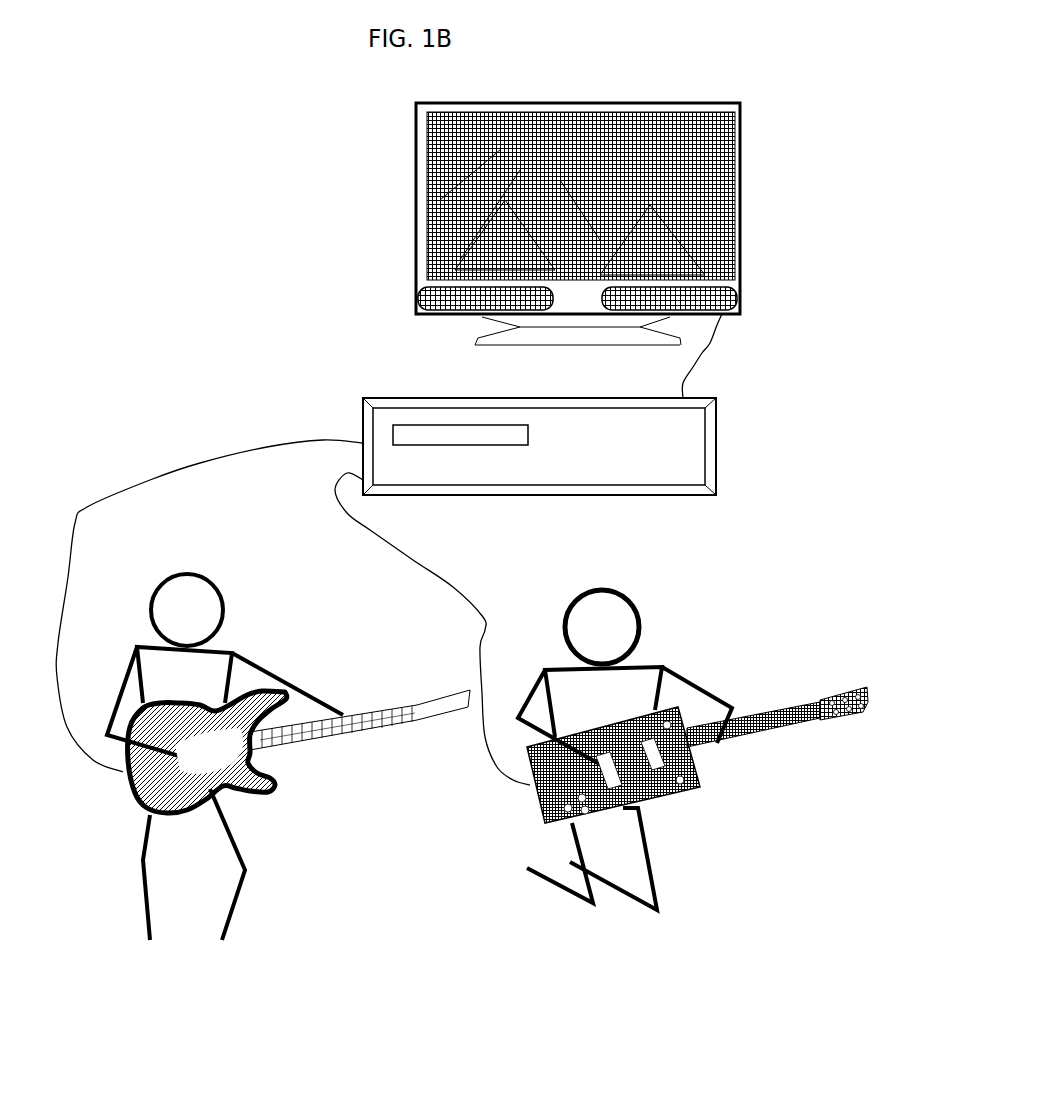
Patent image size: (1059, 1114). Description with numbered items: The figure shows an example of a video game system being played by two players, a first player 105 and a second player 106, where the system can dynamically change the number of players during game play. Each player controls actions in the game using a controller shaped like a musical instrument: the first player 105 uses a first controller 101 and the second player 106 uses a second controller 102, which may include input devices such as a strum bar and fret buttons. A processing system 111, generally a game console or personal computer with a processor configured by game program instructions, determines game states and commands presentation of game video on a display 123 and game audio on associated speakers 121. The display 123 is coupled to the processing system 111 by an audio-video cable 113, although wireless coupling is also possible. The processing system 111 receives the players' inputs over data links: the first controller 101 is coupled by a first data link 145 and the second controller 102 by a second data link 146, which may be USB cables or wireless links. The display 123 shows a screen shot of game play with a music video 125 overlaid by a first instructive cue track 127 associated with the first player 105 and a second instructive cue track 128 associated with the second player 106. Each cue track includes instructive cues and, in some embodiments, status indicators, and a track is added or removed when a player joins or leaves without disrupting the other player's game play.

The first controller 101 is at (263, 792).
The second controller 102 is at (672, 793).
The first player 105 is at (150, 600).
The second player 106 is at (624, 592).
The processing system 111 is at (717, 455).
The audio-video cable 113 is at (711, 347).
The speakers 121 is at (418, 303).
The display 123 is at (480, 185).
The music video 125 is at (672, 146).
The first instructive cue track 127 is at (490, 243).
The second instructive cue track 128 is at (658, 260).
The first data link 145 is at (177, 464).
The second data link 146 is at (435, 577).